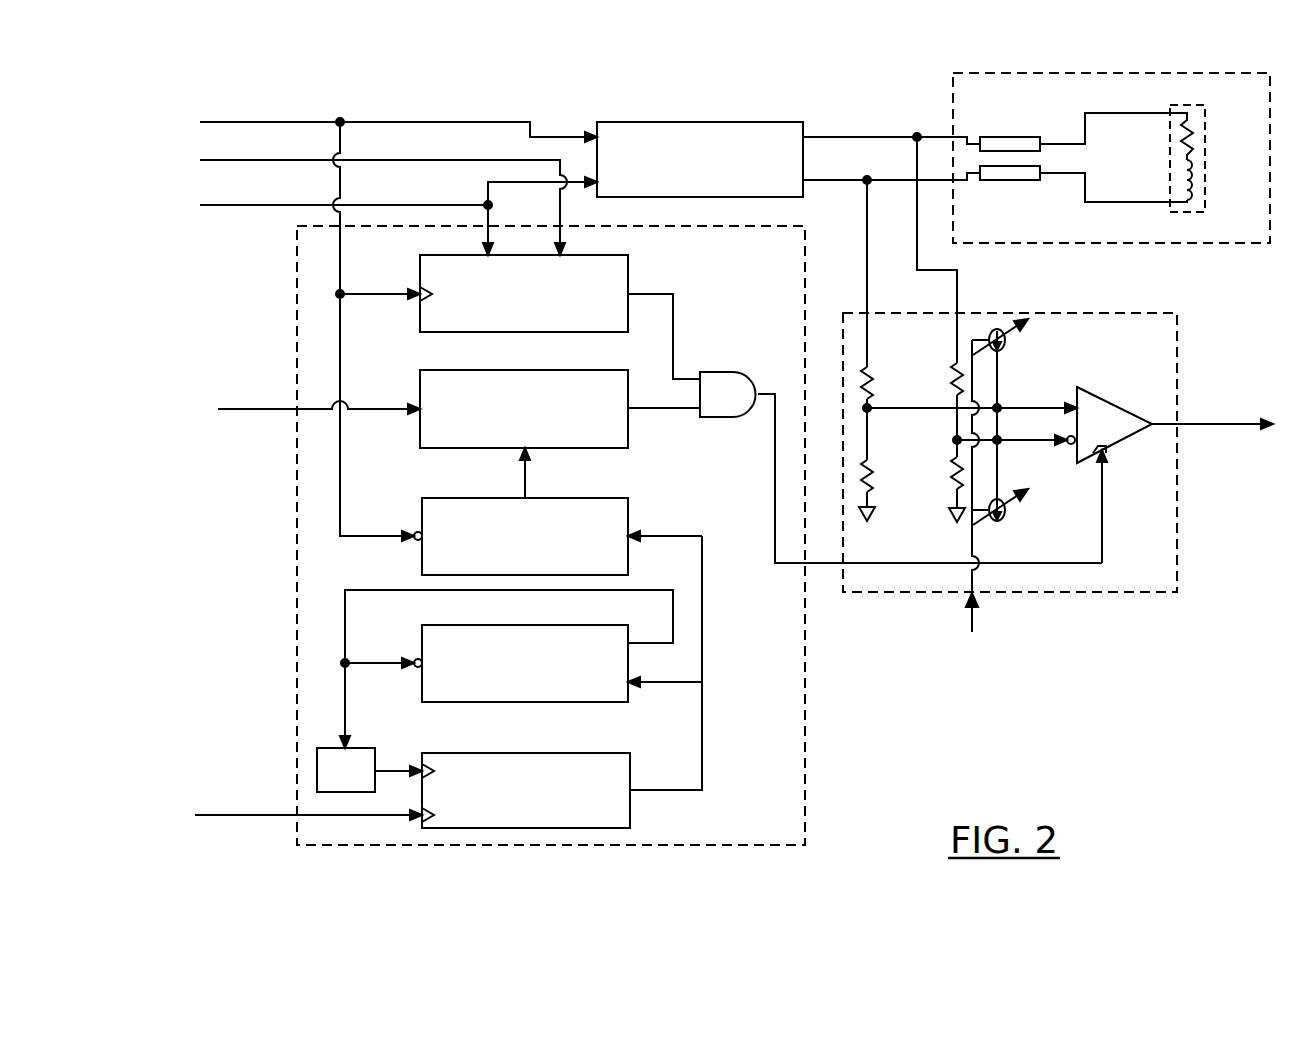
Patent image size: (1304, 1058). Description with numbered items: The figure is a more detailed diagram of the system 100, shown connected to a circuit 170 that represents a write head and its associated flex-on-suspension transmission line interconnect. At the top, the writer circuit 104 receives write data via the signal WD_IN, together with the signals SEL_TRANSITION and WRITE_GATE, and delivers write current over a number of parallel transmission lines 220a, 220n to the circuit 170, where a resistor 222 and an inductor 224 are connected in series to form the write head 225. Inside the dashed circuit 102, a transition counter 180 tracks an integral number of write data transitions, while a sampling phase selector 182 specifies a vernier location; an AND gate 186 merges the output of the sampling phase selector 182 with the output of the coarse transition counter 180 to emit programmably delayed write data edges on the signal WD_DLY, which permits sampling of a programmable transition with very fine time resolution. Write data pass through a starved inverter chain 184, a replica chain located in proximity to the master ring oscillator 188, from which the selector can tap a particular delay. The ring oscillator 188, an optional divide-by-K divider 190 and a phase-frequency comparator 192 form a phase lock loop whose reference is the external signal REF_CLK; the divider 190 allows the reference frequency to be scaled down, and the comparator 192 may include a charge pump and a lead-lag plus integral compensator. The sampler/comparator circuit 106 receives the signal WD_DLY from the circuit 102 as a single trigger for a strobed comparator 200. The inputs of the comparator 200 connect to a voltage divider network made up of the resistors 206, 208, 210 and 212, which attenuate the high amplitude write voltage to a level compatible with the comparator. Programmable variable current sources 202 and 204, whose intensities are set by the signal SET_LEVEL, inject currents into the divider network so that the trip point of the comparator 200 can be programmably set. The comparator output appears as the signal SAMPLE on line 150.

The system 100 is at (550, 95).
The circuit 102 is at (745, 845).
The writer circuit 104 is at (660, 122).
The sampler/comparator circuit 106 is at (1110, 313).
The sample output 150 is at (1180, 428).
The write head circuit 170 is at (1205, 243).
The transition counter circuit 180 is at (455, 255).
The sampling phase selector circuit 182 is at (485, 370).
The starved inverter chain circuit 184 is at (488, 498).
The AND gate 186 is at (733, 372).
The ring oscillator circuit 188 is at (488, 625).
The divider circuit 190 is at (366, 748).
The phase-frequency comparator circuit 192 is at (490, 753).
The strobed comparator circuit 200 is at (1100, 396).
The current source 202 is at (1005, 352).
The current source 204 is at (1005, 520).
The resistor 206 is at (951, 368).
The resistor 208 is at (951, 467).
The resistor 210 is at (878, 463).
The resistor 212 is at (877, 368).
The transmission line 220a is at (995, 137).
The transmission line 220n is at (995, 180).
The resistor 222 is at (1193, 142).
The inductor 224 is at (1194, 177).
The write head 225 is at (1195, 105).